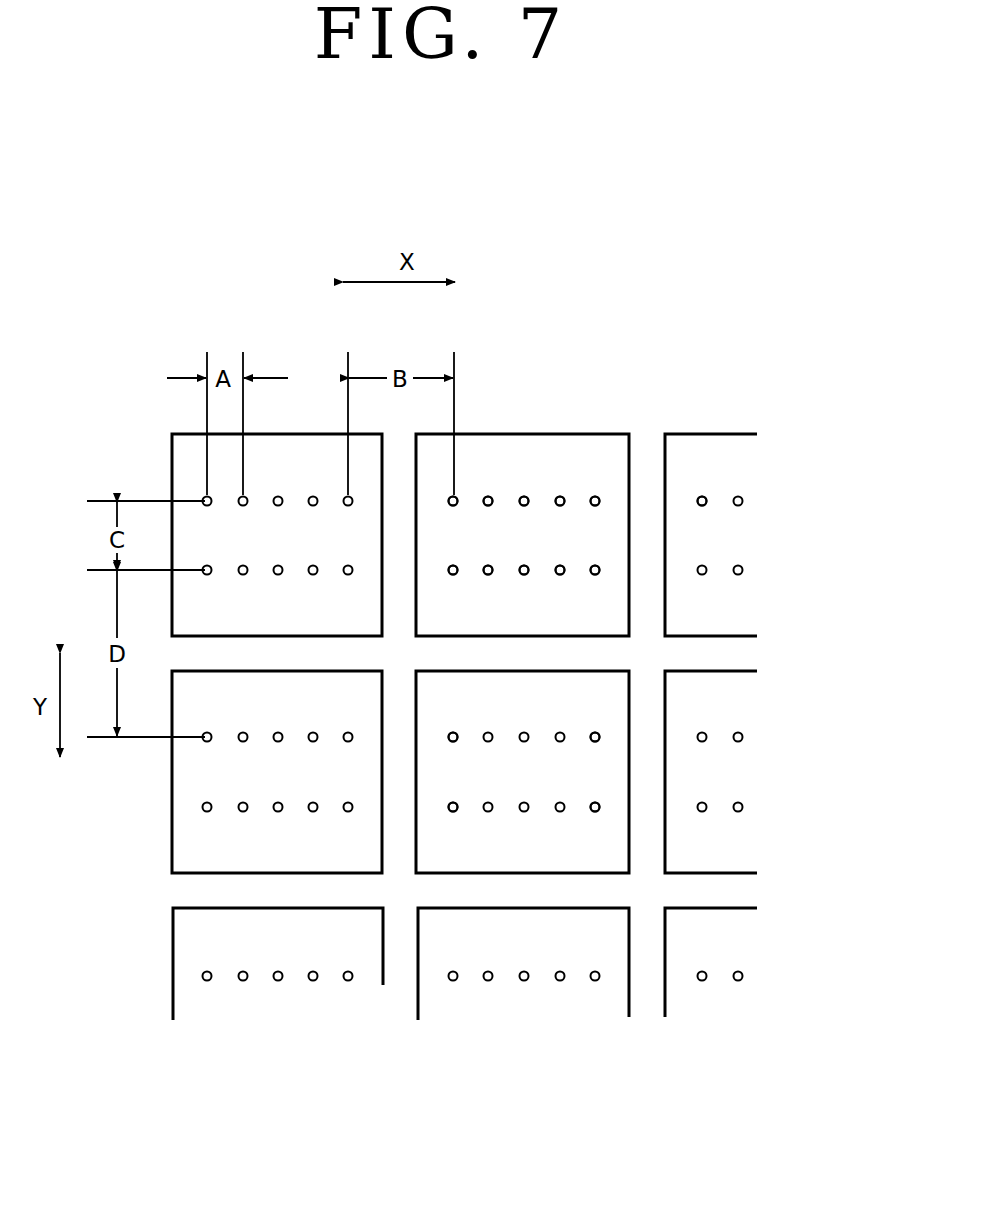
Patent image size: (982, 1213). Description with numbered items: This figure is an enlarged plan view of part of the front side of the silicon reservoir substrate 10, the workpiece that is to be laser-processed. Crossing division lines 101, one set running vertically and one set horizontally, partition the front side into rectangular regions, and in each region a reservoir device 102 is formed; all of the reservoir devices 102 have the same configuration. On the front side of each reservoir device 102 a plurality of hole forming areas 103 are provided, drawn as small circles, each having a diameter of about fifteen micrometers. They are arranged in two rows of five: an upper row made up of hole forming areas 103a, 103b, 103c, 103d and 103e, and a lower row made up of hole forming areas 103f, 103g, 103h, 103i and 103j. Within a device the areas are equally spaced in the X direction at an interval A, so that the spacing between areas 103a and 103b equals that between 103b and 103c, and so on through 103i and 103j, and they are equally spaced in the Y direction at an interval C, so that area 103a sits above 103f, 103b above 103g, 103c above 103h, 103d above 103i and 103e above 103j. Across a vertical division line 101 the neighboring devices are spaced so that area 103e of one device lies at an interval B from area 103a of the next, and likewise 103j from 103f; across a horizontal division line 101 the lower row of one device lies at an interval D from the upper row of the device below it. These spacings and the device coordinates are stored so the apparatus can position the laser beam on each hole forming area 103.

The silicon reservoir substrate 10 is at (158, 357).
The division lines 101 is at (722, 649).
The reservoir devices 102 is at (256, 546).
The hole forming areas 103 is at (690, 357).
The hole forming area 103a is at (453, 496).
The hole forming area 103b is at (488, 496).
The hole forming area 103c is at (524, 496).
The hole forming area 103d is at (560, 496).
The hole forming area 103e is at (595, 496).
The hole forming area 103f is at (453, 565).
The hole forming area 103g is at (488, 575).
The hole forming area 103h is at (524, 565).
The hole forming area 103i is at (560, 575).
The hole forming area 103j is at (595, 565).